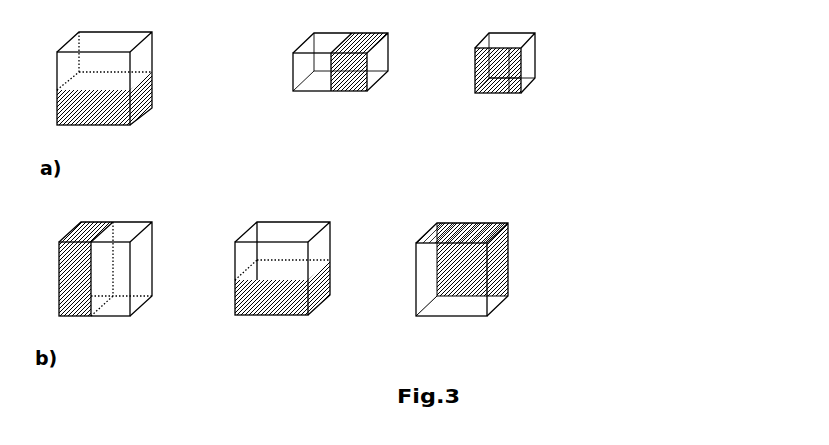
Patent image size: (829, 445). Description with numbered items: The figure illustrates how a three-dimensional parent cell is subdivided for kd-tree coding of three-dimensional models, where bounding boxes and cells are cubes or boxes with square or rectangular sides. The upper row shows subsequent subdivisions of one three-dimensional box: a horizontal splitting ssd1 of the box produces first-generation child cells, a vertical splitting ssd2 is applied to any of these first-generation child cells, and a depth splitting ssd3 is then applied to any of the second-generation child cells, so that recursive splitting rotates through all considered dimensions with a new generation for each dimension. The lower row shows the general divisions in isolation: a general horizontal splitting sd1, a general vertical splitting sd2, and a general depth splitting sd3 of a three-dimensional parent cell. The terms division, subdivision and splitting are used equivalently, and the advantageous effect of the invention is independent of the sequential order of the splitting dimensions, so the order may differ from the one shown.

The horizontal splitting ssd1 is at (104, 96).
The vertical splitting ssd2 is at (340, 91).
The depth splitting ssd3 is at (504, 91).
The general horizontal splitting sd1 is at (105, 288).
The general vertical splitting sd2 is at (282, 289).
The general depth splitting sd3 is at (462, 293).